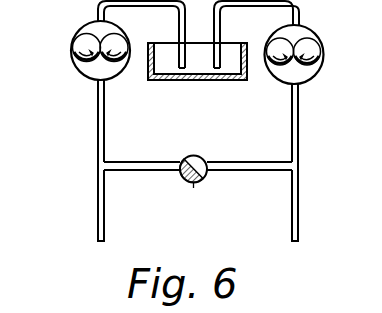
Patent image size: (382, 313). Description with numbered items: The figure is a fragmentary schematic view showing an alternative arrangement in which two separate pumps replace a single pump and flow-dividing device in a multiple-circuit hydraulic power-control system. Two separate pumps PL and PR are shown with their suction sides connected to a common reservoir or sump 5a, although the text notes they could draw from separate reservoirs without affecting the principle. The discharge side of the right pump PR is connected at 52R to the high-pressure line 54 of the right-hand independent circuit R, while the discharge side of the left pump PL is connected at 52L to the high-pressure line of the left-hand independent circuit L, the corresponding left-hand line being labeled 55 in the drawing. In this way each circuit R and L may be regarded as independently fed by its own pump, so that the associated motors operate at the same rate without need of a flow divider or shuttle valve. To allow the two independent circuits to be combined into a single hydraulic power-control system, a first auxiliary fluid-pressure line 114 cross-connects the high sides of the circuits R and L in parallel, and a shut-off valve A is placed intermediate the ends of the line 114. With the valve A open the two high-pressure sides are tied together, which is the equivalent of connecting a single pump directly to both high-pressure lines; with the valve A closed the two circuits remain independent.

The left-hand pump PL is at (71, 51).
The right-hand pump PR is at (323, 53).
The reservoir or sump 5a is at (202, 81).
The left-hand pump discharge connection 52L is at (98, 97).
The right-hand pump discharge connection 52R is at (298, 97).
The high-pressure line of right-hand circuit 54 is at (298, 140).
The cross line 55 is at (98, 160).
The first auxiliary fluid-pressure line 114 is at (237, 170).
The shut-off valve A is at (193, 188).
The left-hand independent circuit L is at (97, 131).
The right-hand independent circuit R is at (299, 175).